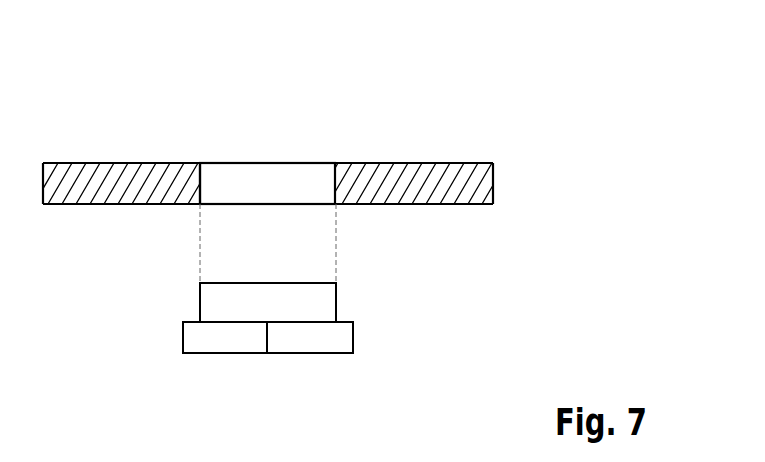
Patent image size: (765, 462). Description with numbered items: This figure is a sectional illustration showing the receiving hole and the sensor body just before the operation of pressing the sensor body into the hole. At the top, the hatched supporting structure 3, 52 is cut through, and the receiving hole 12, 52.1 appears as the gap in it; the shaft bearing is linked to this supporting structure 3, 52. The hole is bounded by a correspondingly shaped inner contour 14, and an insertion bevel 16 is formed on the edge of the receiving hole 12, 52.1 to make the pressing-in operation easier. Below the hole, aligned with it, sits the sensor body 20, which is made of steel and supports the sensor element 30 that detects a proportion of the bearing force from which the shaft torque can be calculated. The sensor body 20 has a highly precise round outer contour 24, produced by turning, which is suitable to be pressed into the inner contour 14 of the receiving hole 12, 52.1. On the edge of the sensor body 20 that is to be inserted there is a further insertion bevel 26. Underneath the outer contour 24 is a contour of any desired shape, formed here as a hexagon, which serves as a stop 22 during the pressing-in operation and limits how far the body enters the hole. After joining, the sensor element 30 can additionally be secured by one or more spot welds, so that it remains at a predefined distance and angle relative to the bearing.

The supporting structure 3 is at (263, 153).
The supporting structure 52 is at (124, 172).
The receiving hole 12 is at (295, 144).
The receiving hole 52.1 is at (313, 167).
The inner contour 14 is at (203, 178).
The insertion bevel 16 is at (204, 207).
The sensor body 20 is at (158, 313).
The insertion bevel 26 is at (199, 282).
The sensor element 30 is at (314, 281).
The outer contour 24 is at (339, 290).
The stop 22 is at (347, 323).